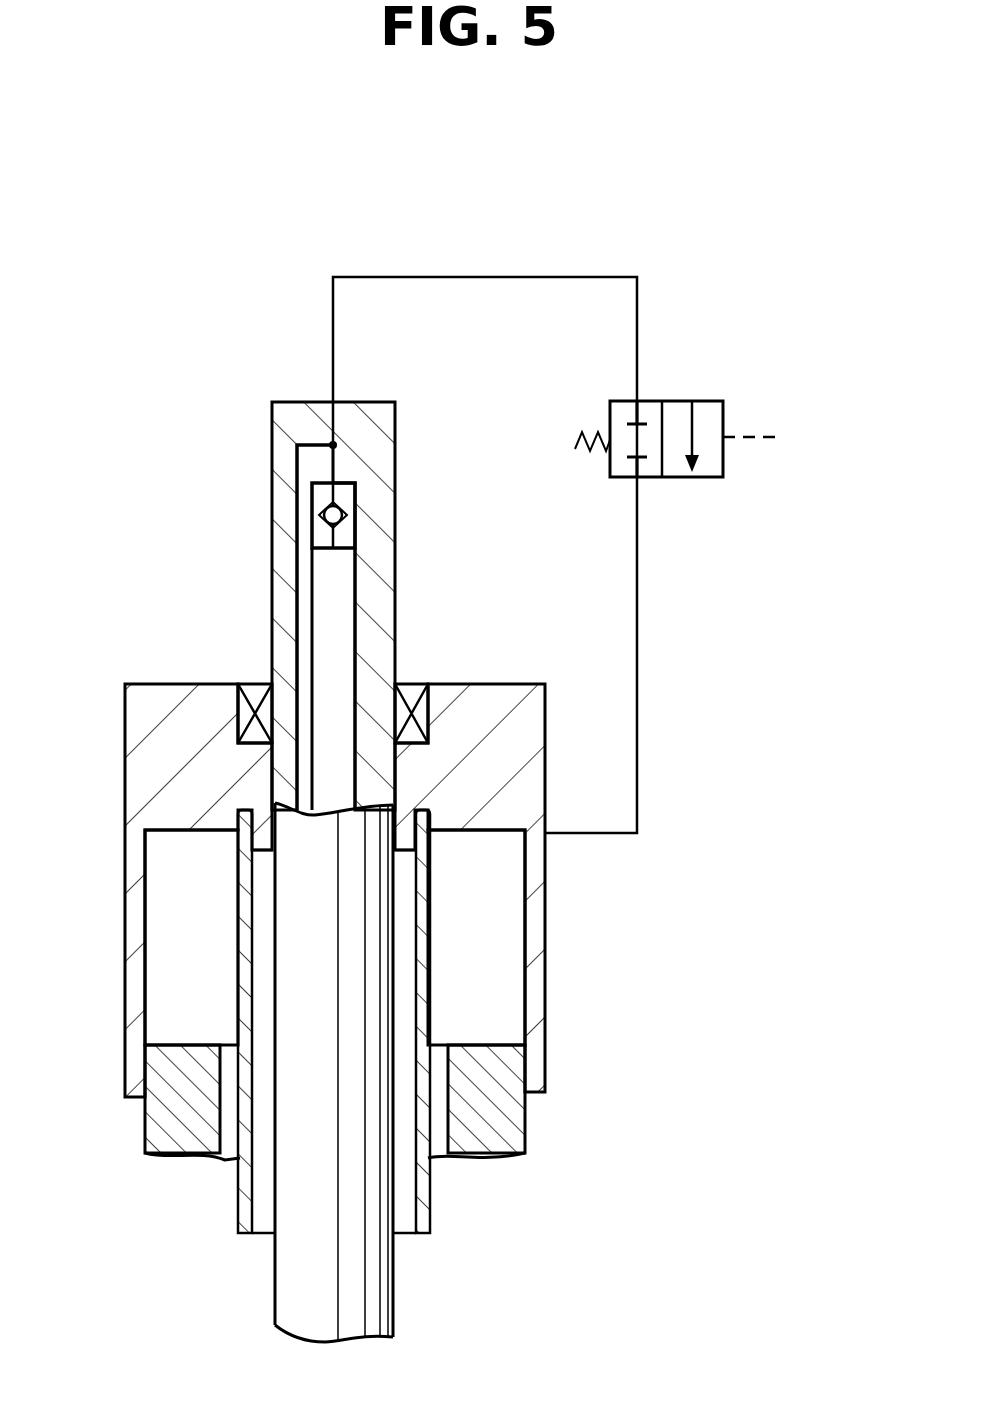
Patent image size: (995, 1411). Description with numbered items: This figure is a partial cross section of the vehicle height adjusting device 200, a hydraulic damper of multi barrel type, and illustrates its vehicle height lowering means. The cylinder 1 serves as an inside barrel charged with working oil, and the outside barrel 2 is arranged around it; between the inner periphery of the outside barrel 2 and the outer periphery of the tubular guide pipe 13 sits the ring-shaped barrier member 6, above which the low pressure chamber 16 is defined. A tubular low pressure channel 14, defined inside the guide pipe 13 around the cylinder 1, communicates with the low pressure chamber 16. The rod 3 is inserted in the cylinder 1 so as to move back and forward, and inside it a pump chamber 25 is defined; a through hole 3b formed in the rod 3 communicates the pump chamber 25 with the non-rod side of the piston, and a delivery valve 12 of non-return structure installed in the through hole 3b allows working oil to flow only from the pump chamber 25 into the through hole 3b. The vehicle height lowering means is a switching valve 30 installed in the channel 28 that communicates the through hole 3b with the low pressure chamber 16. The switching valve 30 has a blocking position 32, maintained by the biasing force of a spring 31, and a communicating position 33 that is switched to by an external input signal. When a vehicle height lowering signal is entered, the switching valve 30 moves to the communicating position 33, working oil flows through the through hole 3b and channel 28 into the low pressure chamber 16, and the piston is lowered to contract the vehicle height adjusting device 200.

The vehicle height adjusting device 200 is at (590, 242).
The cylinder 1 is at (240, 1192).
The outside barrel 2 is at (545, 985).
The rod 3 is at (396, 522).
The through hole 3b is at (297, 572).
The barrier member 6 is at (172, 1125).
The delivery valve 12 is at (340, 487).
The guide pipe 13 is at (227, 1160).
The low pressure channel 14 is at (430, 1160).
The low pressure chamber 16 is at (213, 941).
The pump chamber 25 is at (335, 628).
The channel 28 is at (640, 683).
The switching valve 30 is at (702, 366).
The spring 31 is at (580, 428).
The blocking position 32 is at (625, 481).
The communicating position 33 is at (712, 481).